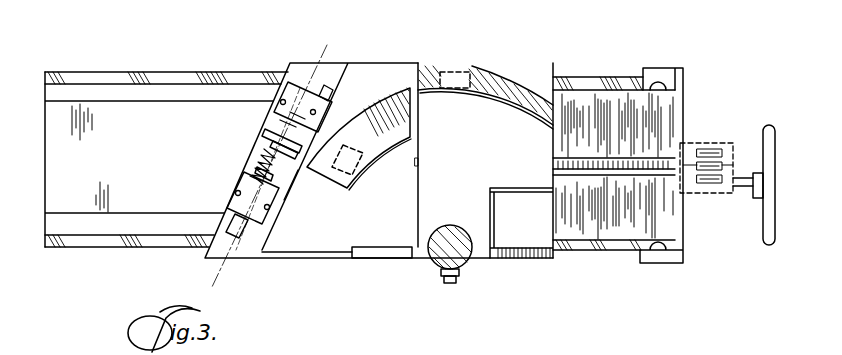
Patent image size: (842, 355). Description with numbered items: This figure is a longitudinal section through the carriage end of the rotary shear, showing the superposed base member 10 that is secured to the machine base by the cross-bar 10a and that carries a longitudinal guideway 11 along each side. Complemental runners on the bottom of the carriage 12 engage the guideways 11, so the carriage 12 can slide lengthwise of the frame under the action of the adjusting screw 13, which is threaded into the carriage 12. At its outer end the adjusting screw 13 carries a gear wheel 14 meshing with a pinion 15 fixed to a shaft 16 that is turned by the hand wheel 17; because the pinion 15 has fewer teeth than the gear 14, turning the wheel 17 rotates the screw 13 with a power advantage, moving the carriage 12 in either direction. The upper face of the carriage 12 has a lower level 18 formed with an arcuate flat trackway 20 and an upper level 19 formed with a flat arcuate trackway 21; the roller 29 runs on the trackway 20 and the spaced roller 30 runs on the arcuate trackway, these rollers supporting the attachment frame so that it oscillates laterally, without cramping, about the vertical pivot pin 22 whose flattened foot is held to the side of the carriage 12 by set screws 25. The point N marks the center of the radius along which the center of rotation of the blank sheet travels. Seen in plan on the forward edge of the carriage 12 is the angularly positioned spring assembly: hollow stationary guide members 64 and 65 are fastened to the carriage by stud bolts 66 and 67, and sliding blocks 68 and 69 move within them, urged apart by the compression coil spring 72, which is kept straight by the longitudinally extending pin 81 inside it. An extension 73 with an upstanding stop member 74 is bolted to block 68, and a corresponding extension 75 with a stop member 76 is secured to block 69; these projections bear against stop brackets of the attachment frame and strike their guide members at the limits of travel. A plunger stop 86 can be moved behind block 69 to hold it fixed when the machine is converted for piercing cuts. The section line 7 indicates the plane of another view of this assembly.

The section line 7- 7 is at (320, 48).
The superposed base member 10 is at (159, 159).
The cross-bar 10a is at (683, 68).
The longitudinal guideways 11 is at (60, 78).
The carriage 12 is at (346, 240).
The adjusting screw 13 is at (627, 162).
The gear wheel 14 is at (708, 143).
The pinion 15 is at (707, 194).
The shaft 16 is at (752, 197).
The wheel 17 is at (769, 245).
The lower level 18 is at (322, 232).
The upper level 19 is at (497, 147).
The arcuate flat trackway 20 is at (375, 105).
The flat arcuate trackway 21 is at (512, 82).
The pivot pin 22 is at (438, 264).
The set screws 25 is at (463, 282).
The roller 29 is at (358, 181).
The roller 30 is at (455, 70).
The hollow stationary guide member 64 is at (262, 225).
The hollow stationary guide member 65 is at (268, 108).
The stud bolts 66 is at (243, 198).
The stud bolts 67 is at (311, 108).
The sliding block 68 is at (247, 228).
The sliding block 69 is at (272, 128).
The compression coil spring 72 is at (268, 153).
The extension 73 is at (374, 109).
The upstanding stop member 74 is at (268, 140).
The extension 75 is at (243, 184).
The upstanding stop member 76 is at (255, 172).
The longitudinally extending pin 81 is at (308, 186).
The plunger stop 86 is at (341, 67).
The center of radius N is at (452, 226).